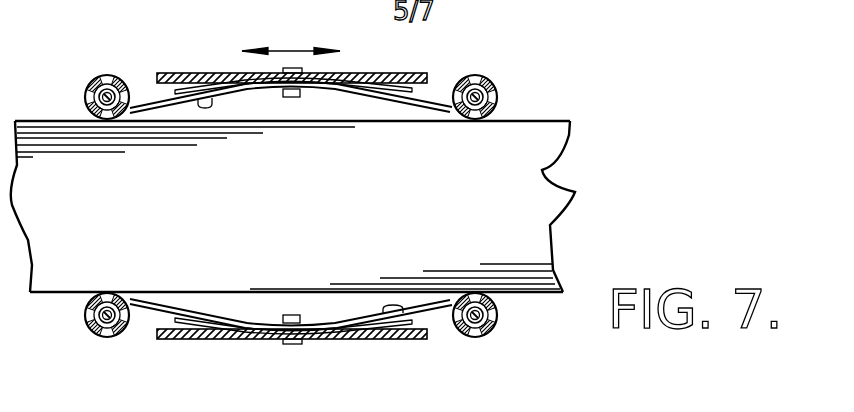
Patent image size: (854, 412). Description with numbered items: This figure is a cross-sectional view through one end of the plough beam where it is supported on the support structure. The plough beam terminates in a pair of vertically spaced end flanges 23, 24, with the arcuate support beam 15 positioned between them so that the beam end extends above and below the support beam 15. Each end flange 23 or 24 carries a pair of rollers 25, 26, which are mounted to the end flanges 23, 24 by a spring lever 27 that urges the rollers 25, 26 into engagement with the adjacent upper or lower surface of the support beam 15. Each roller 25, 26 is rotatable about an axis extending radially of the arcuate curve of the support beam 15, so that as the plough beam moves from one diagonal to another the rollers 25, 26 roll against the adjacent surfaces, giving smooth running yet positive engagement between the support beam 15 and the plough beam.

The arcuate support beam 15 is at (331, 196).
The end flange 23 is at (423, 72).
The end flange 24 is at (257, 340).
The roller 25 is at (493, 78).
The roller 26 is at (108, 76).
The spring lever 27 is at (189, 103).